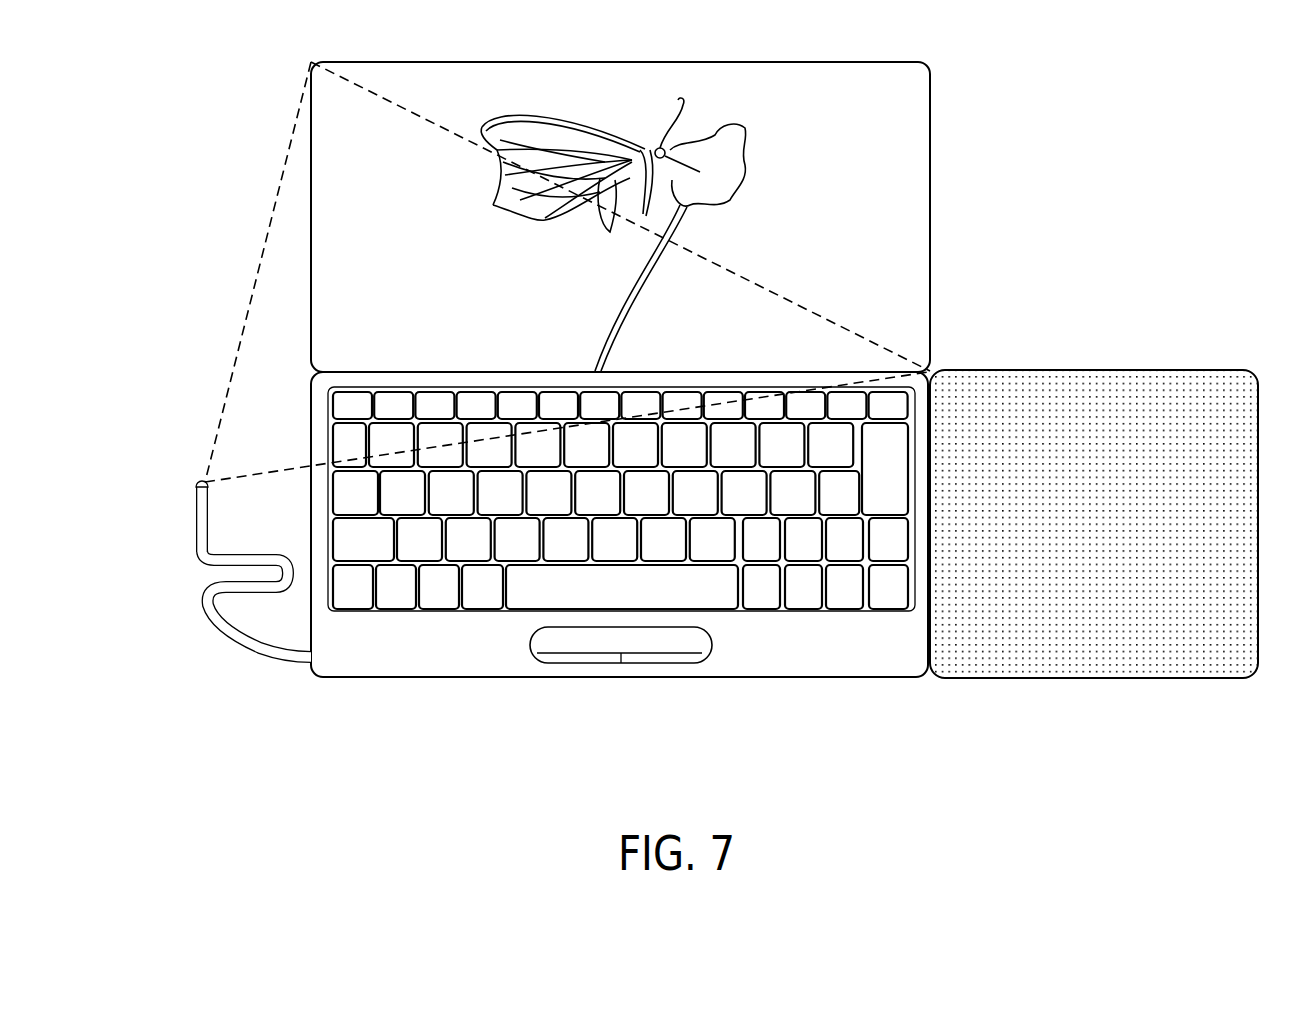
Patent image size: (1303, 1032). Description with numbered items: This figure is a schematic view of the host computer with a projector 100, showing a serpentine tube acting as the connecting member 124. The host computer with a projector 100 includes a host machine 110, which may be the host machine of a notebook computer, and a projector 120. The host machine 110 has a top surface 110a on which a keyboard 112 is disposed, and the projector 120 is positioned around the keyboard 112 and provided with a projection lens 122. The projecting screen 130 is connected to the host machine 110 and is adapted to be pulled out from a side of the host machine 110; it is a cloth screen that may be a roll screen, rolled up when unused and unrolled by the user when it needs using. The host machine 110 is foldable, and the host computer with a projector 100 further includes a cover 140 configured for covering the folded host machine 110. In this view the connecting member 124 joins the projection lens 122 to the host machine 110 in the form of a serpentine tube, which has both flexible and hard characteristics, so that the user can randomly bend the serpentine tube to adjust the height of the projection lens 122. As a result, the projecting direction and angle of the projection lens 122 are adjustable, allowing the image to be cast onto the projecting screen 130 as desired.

The host computer with a projector 100 is at (1283, 764).
The host machine 110 is at (798, 678).
The top surface 110a is at (423, 633).
The keyboard 112 is at (487, 608).
The projector 120 is at (174, 556).
The projection lens 122 is at (205, 480).
The connecting member 124 is at (202, 537).
The projecting screen 130 is at (863, 220).
The cover 140 is at (1040, 388).